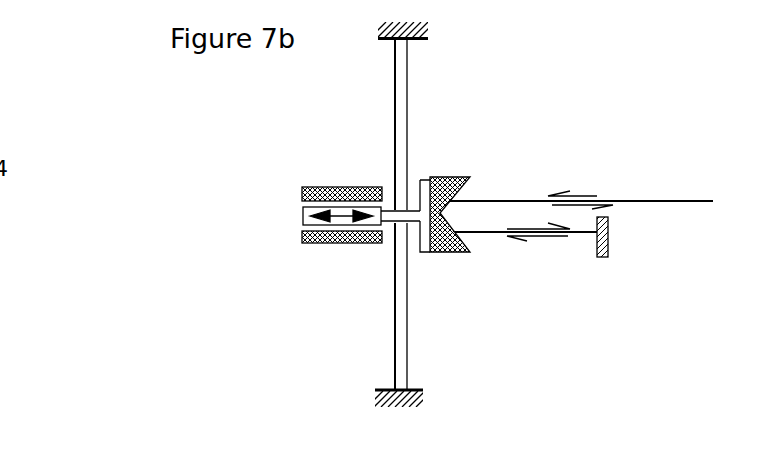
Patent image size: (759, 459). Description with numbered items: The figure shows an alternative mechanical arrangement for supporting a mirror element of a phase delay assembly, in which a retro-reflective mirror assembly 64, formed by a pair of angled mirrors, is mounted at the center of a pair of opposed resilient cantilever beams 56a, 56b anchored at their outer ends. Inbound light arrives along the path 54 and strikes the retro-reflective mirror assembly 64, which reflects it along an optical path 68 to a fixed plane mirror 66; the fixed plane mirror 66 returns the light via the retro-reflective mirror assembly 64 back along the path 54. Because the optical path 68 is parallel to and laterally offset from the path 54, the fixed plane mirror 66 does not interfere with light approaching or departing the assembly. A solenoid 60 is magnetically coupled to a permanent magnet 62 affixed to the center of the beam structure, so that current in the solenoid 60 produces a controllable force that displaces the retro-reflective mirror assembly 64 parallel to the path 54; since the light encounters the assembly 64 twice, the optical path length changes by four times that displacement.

The path of inbound light 54 is at (683, 201).
The resilient cantilever beam 56a is at (407, 103).
The resilient cantilever beam 56b is at (407, 344).
The solenoid 60 is at (316, 187).
The permanent magnet 62 is at (303, 211).
The retro-reflective mirror assembly 64 is at (450, 177).
The fixed plane mirror 66 is at (608, 230).
The optical path 68 is at (580, 233).